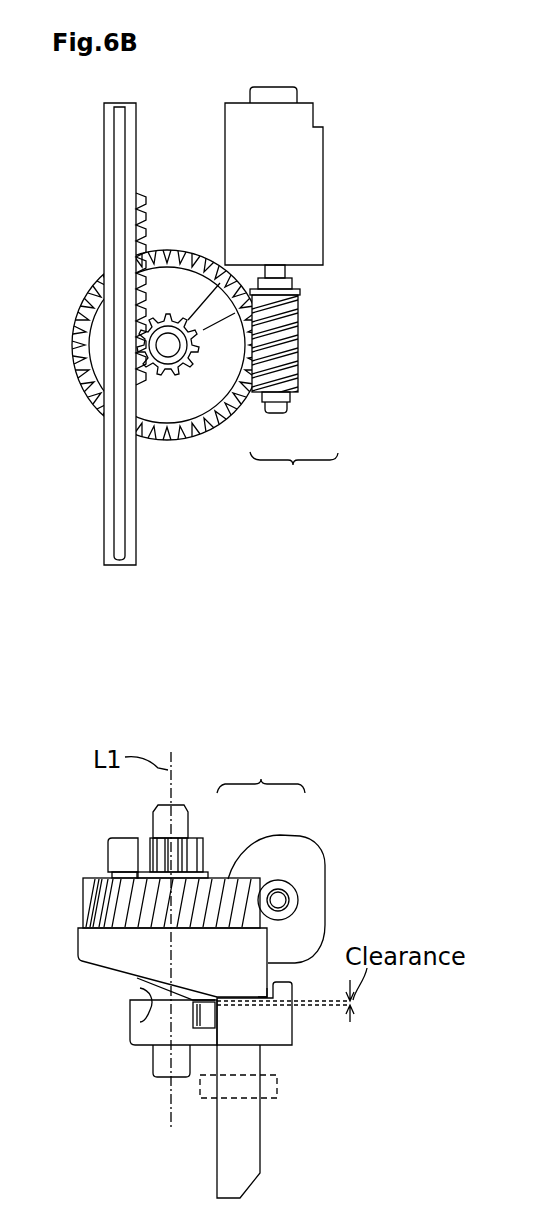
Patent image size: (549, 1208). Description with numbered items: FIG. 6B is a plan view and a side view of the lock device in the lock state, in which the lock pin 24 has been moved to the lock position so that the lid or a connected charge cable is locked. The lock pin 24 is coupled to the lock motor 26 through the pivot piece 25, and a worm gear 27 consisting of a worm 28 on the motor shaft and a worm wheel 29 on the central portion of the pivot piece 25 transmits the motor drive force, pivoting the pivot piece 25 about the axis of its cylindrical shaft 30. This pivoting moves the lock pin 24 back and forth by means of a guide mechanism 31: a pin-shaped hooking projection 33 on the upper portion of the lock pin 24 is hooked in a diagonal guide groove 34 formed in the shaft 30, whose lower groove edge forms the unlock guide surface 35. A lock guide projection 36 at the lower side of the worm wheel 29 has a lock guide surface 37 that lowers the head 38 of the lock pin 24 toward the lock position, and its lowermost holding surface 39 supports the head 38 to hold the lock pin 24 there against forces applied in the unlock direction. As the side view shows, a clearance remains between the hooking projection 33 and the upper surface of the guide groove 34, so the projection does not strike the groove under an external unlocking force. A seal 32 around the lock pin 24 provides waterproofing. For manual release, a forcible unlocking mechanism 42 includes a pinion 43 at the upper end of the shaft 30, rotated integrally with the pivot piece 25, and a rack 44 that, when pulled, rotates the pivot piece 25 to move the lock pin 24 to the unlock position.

The lock pin 24 is at (260, 1152).
The pivot piece 25 is at (92, 286).
The lock motor 26 is at (225, 137).
The worm gear 27 is at (277, 622).
The worm 28 is at (305, 380).
The worm wheel 29 is at (236, 414).
The shaft 30 is at (173, 314).
The guide mechanism 31 is at (66, 1027).
The seal 32 is at (280, 1087).
The hooking projection 33 is at (190, 1012).
The guide groove 34 is at (192, 1016).
The unlock guide surface 35 is at (140, 989).
The lock guide projection 36 is at (186, 442).
The lock guide surface 37 is at (178, 990).
The head 38 is at (262, 1023).
The holding surface 39 is at (243, 997).
The forcible unlocking mechanism 42 is at (84, 551).
The pinion 43 is at (189, 371).
The rack 44 is at (103, 463).